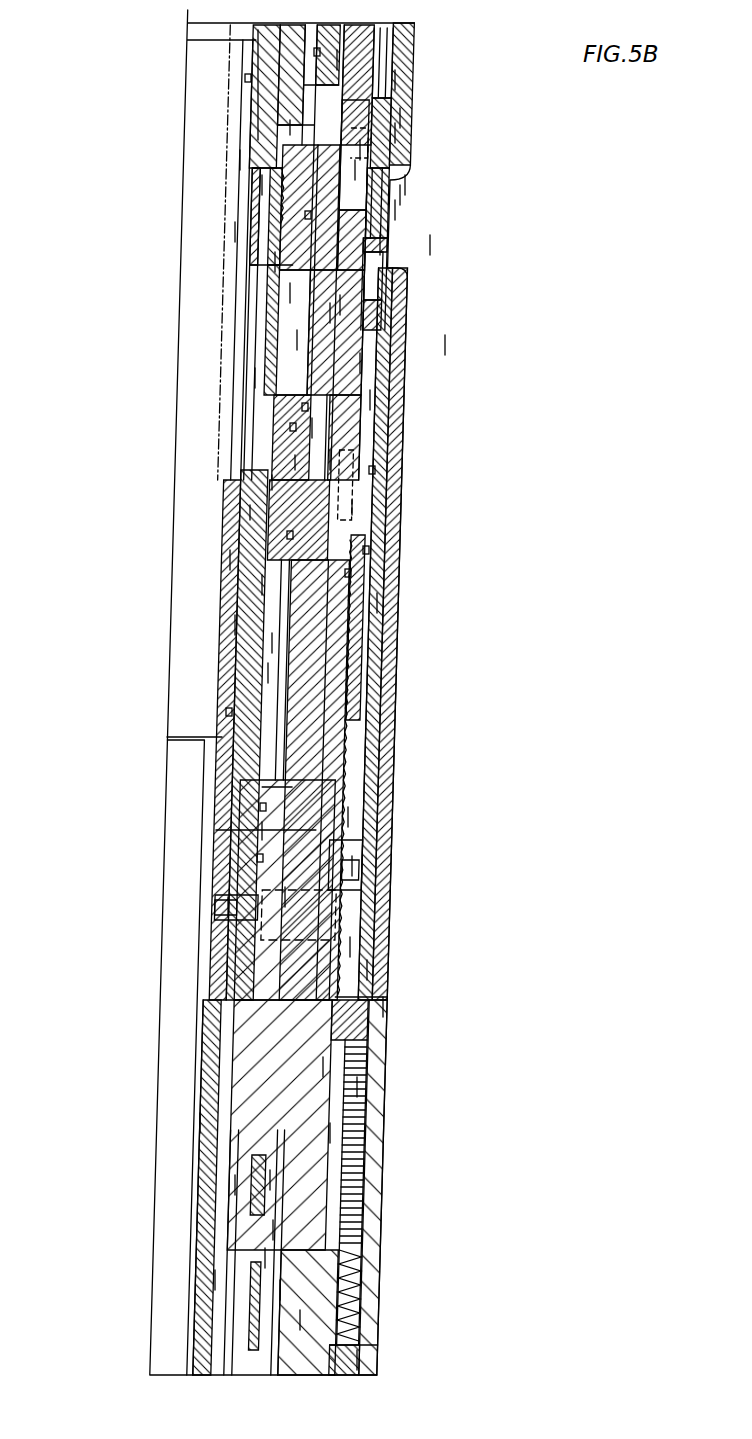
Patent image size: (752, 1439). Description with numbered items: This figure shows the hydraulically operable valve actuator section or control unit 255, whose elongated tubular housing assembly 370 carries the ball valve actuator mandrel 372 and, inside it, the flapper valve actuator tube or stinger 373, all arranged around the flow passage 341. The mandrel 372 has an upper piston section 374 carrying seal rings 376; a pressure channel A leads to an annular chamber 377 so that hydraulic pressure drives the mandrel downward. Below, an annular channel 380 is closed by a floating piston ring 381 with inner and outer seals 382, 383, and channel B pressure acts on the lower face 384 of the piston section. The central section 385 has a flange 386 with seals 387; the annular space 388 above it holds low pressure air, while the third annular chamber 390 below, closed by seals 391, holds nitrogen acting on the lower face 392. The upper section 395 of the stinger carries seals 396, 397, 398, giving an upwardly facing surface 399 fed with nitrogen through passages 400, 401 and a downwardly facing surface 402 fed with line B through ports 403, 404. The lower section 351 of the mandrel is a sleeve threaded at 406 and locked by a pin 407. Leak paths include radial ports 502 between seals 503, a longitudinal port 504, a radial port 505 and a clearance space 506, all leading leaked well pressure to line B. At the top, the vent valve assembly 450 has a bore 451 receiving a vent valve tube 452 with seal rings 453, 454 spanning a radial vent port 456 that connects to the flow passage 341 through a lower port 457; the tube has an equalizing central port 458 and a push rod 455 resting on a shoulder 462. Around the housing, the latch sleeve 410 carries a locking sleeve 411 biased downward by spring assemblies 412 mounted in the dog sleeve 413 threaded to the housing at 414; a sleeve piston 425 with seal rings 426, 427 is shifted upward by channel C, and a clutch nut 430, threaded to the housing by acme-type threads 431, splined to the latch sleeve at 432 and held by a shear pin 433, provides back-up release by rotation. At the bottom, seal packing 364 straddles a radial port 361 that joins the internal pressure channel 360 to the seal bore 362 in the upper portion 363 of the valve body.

The seals 503 is at (314, 52).
The upper seal rings 396 is at (245, 78).
The upper piston section 374 is at (275, 103).
The annular chamber 377 is at (290, 128).
The longitudinal port 504 is at (245, 160).
The passage 401 is at (262, 185).
The seal rings 376 is at (308, 215).
The passage 400 is at (240, 232).
The upper section of stinger tube 395 is at (280, 262).
The port 403 is at (290, 293).
The annular channel 380 is at (337, 313).
The shoulder 462 is at (297, 340).
The ball valve actuator mandrel 372 is at (255, 378).
The upwardly facing surface 399 is at (305, 407).
The middle seals 397 is at (293, 427).
The inner seal 382 is at (300, 460).
The downwardly facing surface 402 is at (277, 482).
The annular space 388 is at (253, 512).
The central section of actuator mandrel 385 is at (290, 535).
The flange 386 is at (265, 583).
The lower face of flange 392 is at (237, 620).
The clearance space 506 is at (273, 643).
The third annular chamber 390 is at (270, 672).
The lower seals 398 is at (229, 712).
The flow passage 341 is at (165, 757).
The radial port 505 is at (265, 830).
The thread 406 is at (260, 858).
The pin 407 is at (233, 907).
The housing assembly 370 is at (205, 1123).
The flapper valve actuator tube (stinger) 373 is at (237, 1185).
The lower section of actuator mandrel 351 is at (217, 1282).
The radial ports 502 is at (337, 60).
The bore 451 is at (390, 80).
The upper seal ring 453 is at (398, 118).
The vent valve assembly 450 is at (395, 133).
The radial vent port 456 is at (345, 148).
The pressure channel A is at (335, 166).
The lower seal ring 454 is at (403, 180).
The vent valve tube 452 is at (402, 197).
The valve actuator section (control unit) 255 is at (450, 247).
The central port 458 is at (392, 205).
The push rod section 455 is at (365, 242).
The lower face of piston section 384 is at (340, 305).
The channel B (line B) B is at (445, 345).
The outer seal 383 is at (370, 400).
The floating piston ring 381 is at (312, 428).
The port 404 is at (330, 460).
The upper seal ring 426 is at (375, 476).
The channel C (line C) C is at (355, 503).
The seals 387 is at (368, 548).
The lower seal ring 427 is at (348, 573).
The sleeve piston 425 is at (377, 603).
The seals 391 is at (265, 806).
The acme-type threads 431 is at (348, 817).
The shear pin 433 is at (352, 866).
The lower port 457 is at (285, 897).
The clutch nut 430 is at (350, 947).
The spline connection 432 is at (367, 970).
The latch sleeve 410 is at (383, 1007).
The threaded connection 414 is at (323, 1067).
The spring assemblies 412 is at (357, 1087).
The dog sleeve 413 is at (330, 1133).
The seal packing 364 is at (270, 1180).
The radial port 361 is at (273, 1230).
The seal bore 362 is at (265, 1258).
The internal pressure channel 360 is at (280, 1290).
The upper portion of valve body 363 is at (300, 1320).
The locking sleeve 411 is at (357, 1357).